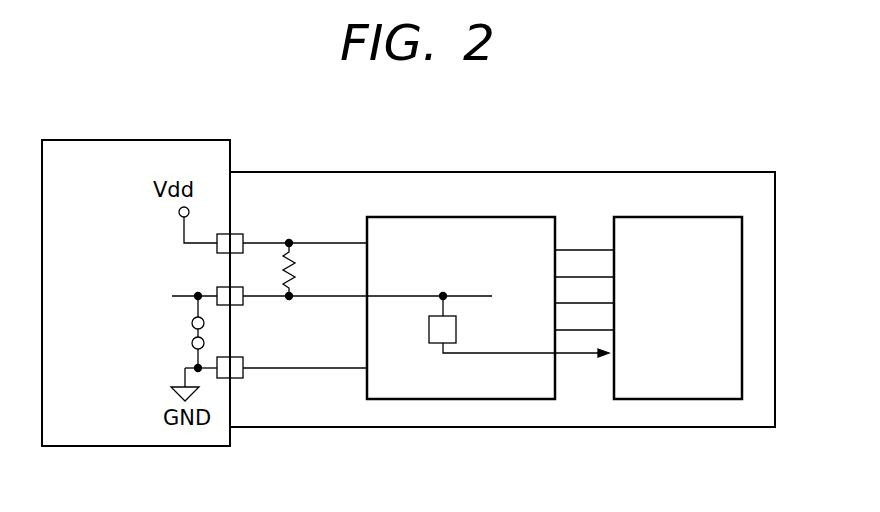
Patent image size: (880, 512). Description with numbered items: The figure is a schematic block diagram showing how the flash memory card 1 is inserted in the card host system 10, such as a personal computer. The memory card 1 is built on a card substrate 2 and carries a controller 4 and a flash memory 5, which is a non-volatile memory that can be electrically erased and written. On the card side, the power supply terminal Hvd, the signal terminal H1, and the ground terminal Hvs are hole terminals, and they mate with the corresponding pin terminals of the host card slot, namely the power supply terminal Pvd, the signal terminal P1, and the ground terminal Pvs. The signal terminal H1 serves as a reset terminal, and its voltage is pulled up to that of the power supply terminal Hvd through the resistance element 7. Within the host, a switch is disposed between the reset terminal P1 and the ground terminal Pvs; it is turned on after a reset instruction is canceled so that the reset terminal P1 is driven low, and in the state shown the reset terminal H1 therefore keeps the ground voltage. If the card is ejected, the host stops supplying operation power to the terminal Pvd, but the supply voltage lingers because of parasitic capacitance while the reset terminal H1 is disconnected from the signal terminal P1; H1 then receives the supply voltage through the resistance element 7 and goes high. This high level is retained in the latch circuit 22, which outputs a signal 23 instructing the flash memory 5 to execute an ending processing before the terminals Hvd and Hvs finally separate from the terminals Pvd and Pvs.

The flash memory card 1 is at (533, 272).
The card substrate 2 is at (773, 384).
The controller 4 is at (470, 388).
The flash memory 5 is at (666, 382).
The resistance element 7 is at (301, 270).
The card host system 10 is at (70, 443).
The latch circuit 22 is at (457, 330).
The signal 23 is at (570, 357).
The power supply terminal Pvd is at (224, 236).
The power supply terminal Hvd is at (240, 240).
The signal terminal P1 is at (223, 287).
The signal terminal H1 is at (235, 303).
The ground terminal Hvs is at (245, 373).
The ground terminal Pvs is at (226, 378).